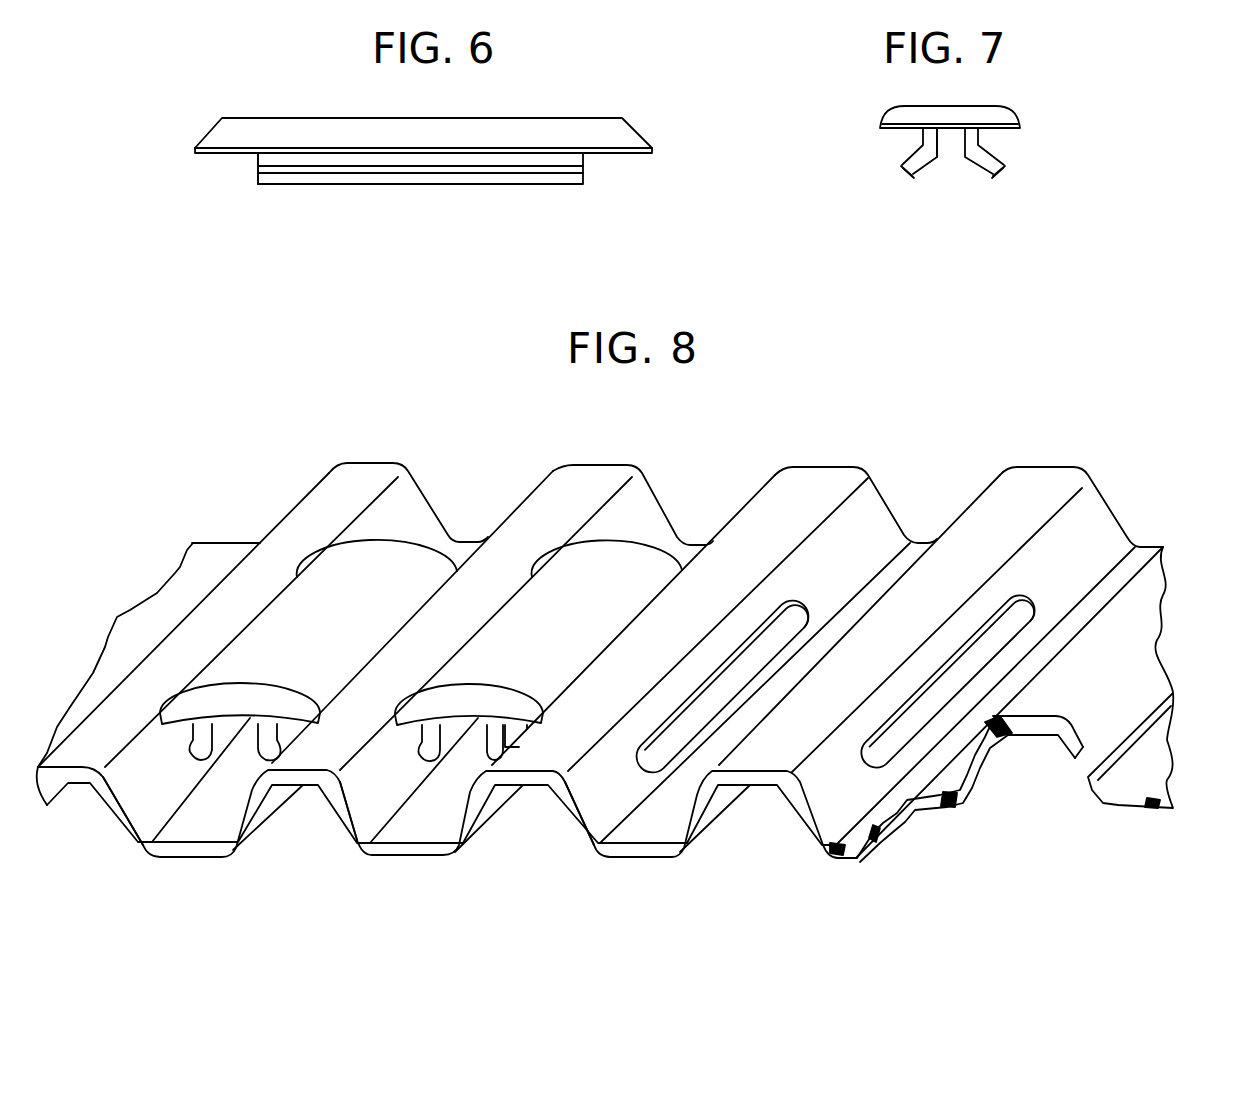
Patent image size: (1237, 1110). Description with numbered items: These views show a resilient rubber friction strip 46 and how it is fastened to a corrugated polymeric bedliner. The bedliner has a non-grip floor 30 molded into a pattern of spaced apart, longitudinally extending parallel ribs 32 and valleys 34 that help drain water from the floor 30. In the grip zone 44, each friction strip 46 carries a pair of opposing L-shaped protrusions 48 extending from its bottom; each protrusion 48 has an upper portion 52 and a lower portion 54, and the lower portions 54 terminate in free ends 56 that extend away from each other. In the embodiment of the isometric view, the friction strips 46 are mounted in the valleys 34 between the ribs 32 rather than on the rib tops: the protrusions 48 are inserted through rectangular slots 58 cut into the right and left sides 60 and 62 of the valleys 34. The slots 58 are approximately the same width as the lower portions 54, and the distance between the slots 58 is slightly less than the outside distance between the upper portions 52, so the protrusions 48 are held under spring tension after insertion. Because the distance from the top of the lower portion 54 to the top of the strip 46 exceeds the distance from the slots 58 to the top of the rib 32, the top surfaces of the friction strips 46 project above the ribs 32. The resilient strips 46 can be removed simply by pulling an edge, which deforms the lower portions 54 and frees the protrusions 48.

In FIG. 8, the non-grip floor 30 is at (215, 557).
In FIG. 8, the ribs 32 is at (368, 473).
In FIG. 8, the valleys 34 is at (463, 542).
In FIG. 8, the grip zone 44 is at (520, 451).
In FIG. 6, the friction strip 46 is at (627, 136).
In FIG. 7, the friction strip 46 is at (940, 110).
In FIG. 8, the friction strip 46 is at (342, 632).
In FIG. 6, the L-shaped protrusions 48 is at (240, 172).
In FIG. 7, the L-shaped protrusions 48 is at (960, 172).
In FIG. 8, the L-shaped protrusions 48 is at (229, 752).
In FIG. 6, the upper portions 52 is at (583, 157).
In FIG. 7, the upper portions 52 is at (922, 137).
In FIG. 6, the lower portions 54 is at (583, 172).
In FIG. 7, the lower portions 54 is at (925, 170).
In FIG. 6, the free ends 56 is at (510, 181).
In FIG. 7, the free ends 56 is at (907, 167).
In FIG. 8, the slots 58 is at (783, 607).
In FIG. 8, the right side of valley 60 is at (243, 797).
In FIG. 8, the left side of valley 62 is at (140, 790).